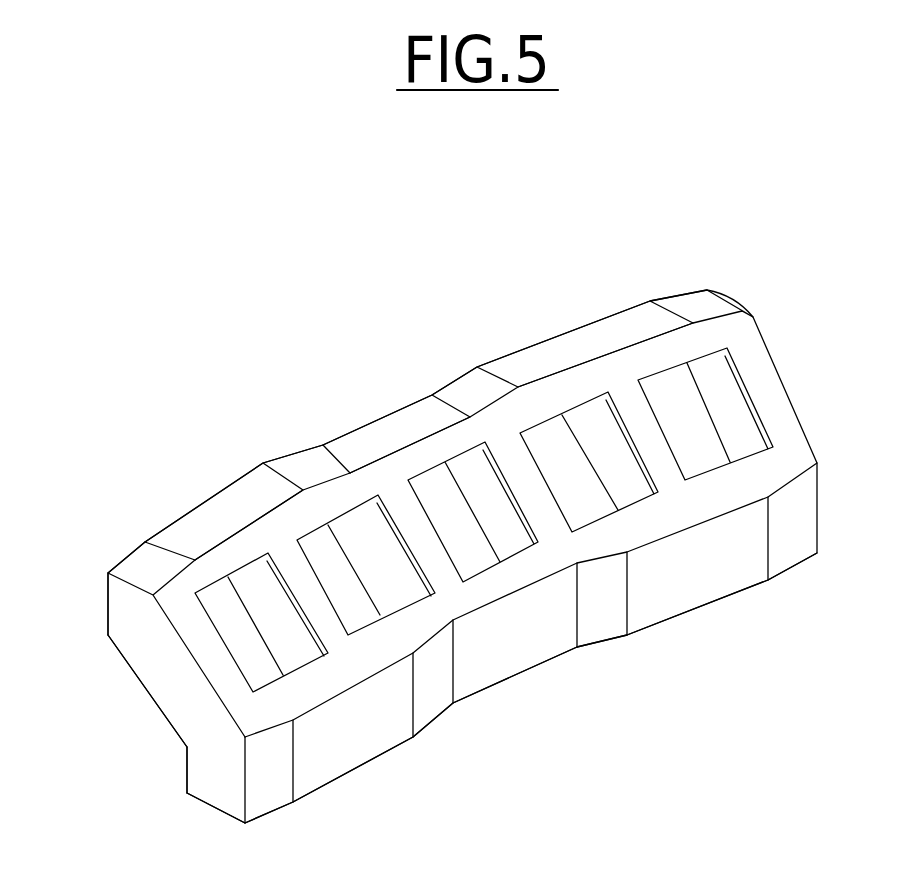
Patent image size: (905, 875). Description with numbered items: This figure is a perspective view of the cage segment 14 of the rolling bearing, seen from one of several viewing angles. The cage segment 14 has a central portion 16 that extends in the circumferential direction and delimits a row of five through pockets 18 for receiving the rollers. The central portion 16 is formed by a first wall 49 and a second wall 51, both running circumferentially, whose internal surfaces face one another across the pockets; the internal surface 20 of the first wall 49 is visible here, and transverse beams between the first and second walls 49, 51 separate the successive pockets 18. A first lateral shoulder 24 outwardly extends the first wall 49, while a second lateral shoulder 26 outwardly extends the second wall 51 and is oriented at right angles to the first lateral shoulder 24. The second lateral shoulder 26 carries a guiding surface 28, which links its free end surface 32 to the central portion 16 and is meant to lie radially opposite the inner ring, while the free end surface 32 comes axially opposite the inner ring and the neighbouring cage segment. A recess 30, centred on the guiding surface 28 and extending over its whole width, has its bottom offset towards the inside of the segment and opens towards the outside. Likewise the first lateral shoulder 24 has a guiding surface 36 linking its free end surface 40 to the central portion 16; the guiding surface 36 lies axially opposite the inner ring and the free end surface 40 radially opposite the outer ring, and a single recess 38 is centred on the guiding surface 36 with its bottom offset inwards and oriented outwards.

The cage segment 14 is at (329, 321).
The central portion 16 is at (163, 678).
The through pockets 18 is at (730, 408).
The internal surface 20 is at (228, 580).
The first lateral shoulder 24 is at (109, 612).
The second lateral shoulder 26 is at (198, 783).
The guiding surface 28 is at (387, 733).
The recess 30 is at (530, 648).
The free end surface 32 is at (207, 804).
The guiding surface 36 is at (228, 498).
The recess 38 is at (388, 420).
The free end surface 40 is at (105, 578).
The first wall 49 is at (323, 507).
The second wall 51 is at (337, 675).